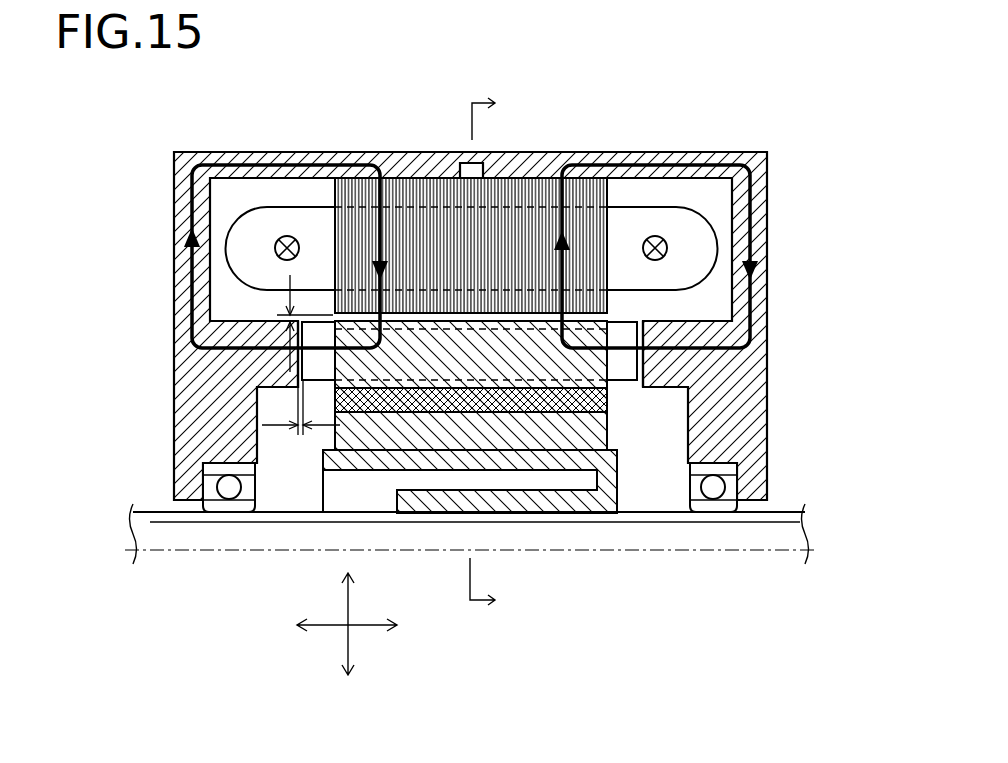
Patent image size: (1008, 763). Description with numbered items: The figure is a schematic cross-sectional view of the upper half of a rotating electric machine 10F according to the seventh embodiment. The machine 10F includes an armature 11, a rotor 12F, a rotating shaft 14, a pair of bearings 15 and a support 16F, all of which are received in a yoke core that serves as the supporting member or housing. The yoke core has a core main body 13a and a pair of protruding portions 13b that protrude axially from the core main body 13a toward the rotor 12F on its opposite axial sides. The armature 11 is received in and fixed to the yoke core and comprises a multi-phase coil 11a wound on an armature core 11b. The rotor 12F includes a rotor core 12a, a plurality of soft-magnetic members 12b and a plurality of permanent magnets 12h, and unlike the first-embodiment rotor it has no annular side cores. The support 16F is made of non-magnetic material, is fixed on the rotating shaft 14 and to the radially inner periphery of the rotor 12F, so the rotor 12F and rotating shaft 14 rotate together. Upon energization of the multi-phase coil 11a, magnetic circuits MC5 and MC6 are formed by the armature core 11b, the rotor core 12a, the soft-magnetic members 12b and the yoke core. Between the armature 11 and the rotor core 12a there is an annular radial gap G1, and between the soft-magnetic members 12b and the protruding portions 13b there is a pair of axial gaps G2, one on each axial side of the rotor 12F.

The rotating electric machine 10F is at (252, 138).
The armature 11 is at (280, 101).
The multi-phase coil 11a is at (317, 233).
The armature core 11b is at (447, 240).
The rotor 12F is at (688, 101).
The rotor core 12a is at (475, 350).
The permanent magnets 12h is at (565, 392).
The soft-magnetic members 12b is at (623, 337).
The core main body 13a is at (772, 158).
The protruding portions 13b is at (268, 362).
The rotating shaft 14 is at (175, 535).
The bearings 15 is at (228, 492).
The support 16F is at (540, 497).
The magnetic circuit MC5 is at (190, 228).
The magnetic circuit MC6 is at (752, 247).
The radial gap G1 is at (287, 323).
The axial gaps G2 is at (301, 423).